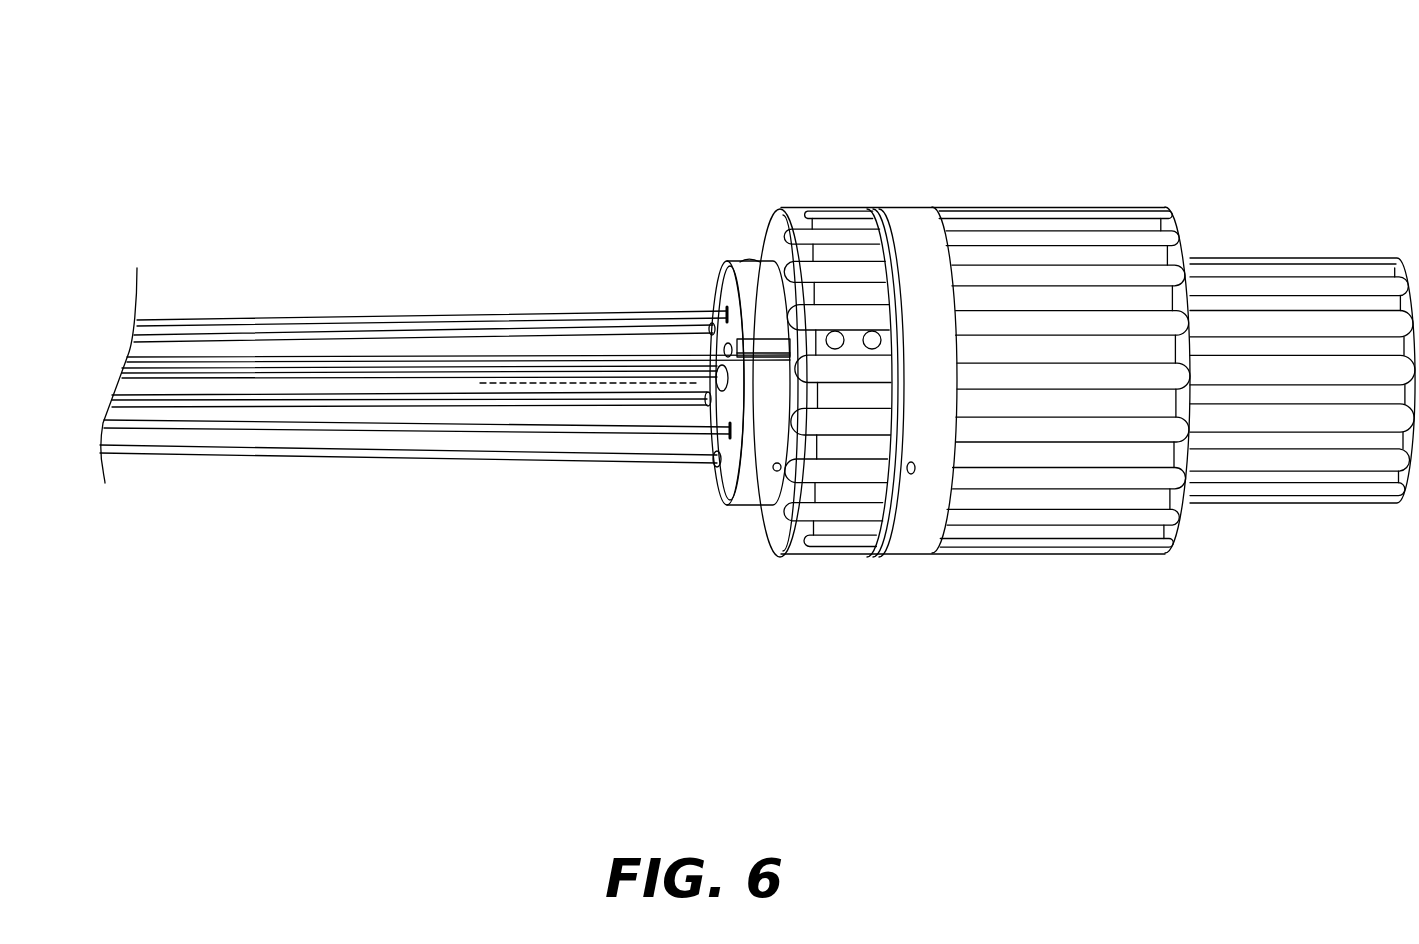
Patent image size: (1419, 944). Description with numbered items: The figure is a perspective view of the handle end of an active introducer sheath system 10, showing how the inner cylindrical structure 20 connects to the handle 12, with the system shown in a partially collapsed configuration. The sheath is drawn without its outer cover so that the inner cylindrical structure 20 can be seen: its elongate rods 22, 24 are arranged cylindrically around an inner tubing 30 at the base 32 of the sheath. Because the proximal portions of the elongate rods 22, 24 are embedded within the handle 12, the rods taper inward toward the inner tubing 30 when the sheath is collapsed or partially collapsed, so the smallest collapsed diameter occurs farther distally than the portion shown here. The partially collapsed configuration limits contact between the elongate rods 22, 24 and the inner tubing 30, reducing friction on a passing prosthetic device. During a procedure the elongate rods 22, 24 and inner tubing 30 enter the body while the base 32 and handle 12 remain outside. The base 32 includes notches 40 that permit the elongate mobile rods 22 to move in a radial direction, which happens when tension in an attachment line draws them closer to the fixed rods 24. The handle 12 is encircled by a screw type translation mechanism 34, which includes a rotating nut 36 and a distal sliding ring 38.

The active introducer sheath system 10 is at (731, 107).
The handle 12 is at (1320, 480).
The inner cylindrical structure 20 is at (597, 257).
The elongate mobile rods 22 is at (133, 338).
The fixed rods 24 is at (135, 321).
The inner tubing 30 is at (113, 398).
The base 32 is at (746, 497).
The screw type translation mechanism 34 is at (773, 197).
The rotating nut 36 is at (1042, 545).
The distal sliding ring 38 is at (832, 540).
The notches 40 is at (747, 270).